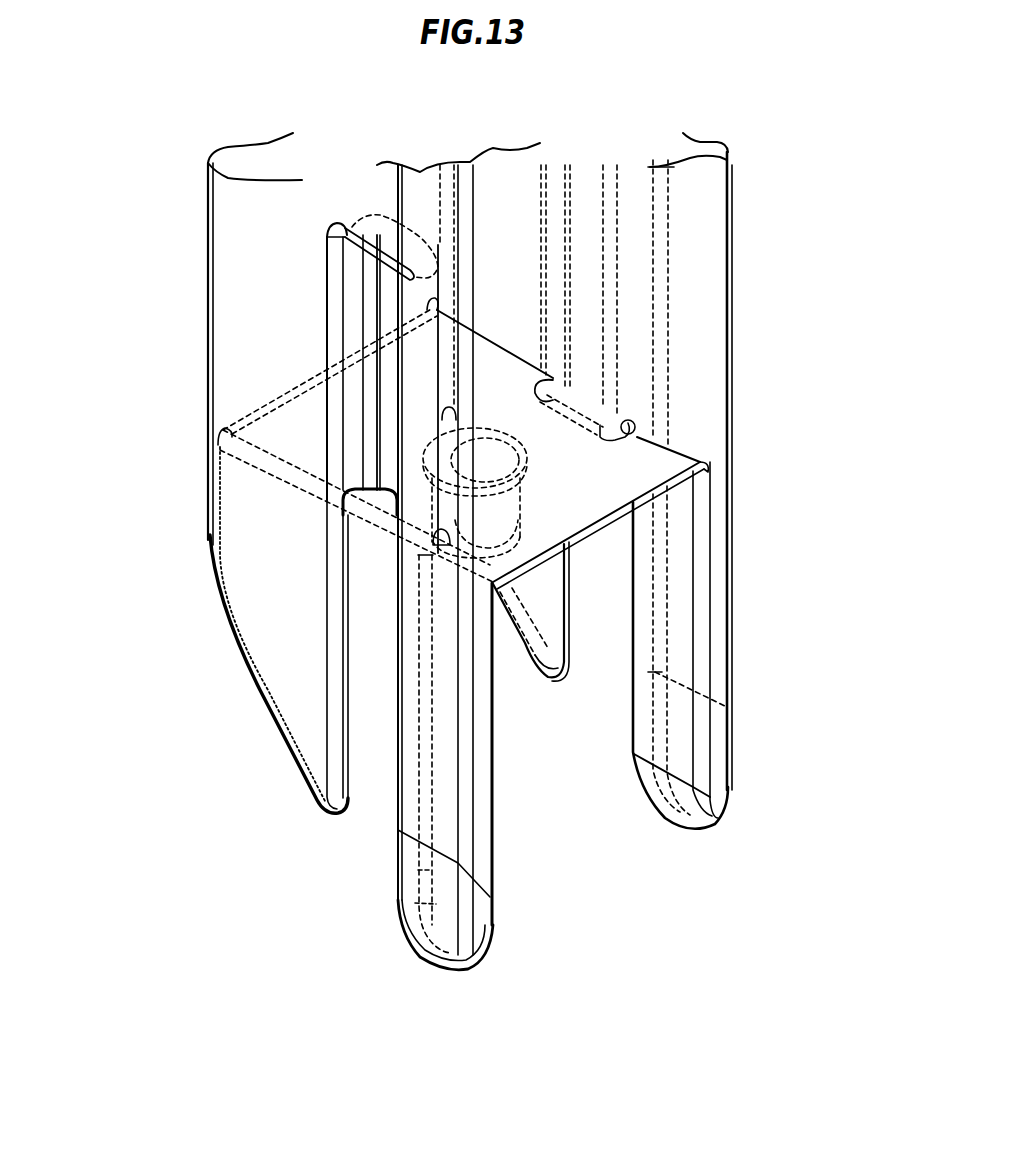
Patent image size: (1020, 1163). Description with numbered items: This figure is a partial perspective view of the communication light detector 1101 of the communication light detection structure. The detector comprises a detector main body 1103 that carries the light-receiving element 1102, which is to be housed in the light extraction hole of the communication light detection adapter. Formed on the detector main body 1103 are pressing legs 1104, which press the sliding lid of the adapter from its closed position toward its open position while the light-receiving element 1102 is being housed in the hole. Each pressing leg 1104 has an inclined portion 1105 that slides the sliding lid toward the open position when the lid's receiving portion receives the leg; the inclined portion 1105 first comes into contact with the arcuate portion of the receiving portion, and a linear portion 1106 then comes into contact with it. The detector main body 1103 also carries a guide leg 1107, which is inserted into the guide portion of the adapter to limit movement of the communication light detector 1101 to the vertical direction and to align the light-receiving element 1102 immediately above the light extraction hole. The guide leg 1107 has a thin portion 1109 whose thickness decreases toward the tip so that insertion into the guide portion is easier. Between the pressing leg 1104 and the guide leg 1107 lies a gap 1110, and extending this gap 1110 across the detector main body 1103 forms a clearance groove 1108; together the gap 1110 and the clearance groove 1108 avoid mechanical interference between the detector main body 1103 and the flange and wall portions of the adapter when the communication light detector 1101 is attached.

The communication light detector 1101 is at (773, 220).
The light-receiving element 1102 is at (533, 503).
The detector main body 1103 is at (713, 285).
The pressing leg 1104 is at (220, 382).
The inclined portion 1105 is at (243, 670).
The linear portion 1106 is at (217, 472).
The guide leg 1107 is at (477, 714).
The clearance groove 1108 is at (388, 345).
The thin portion 1109 is at (400, 897).
The gap 1110 is at (372, 625).